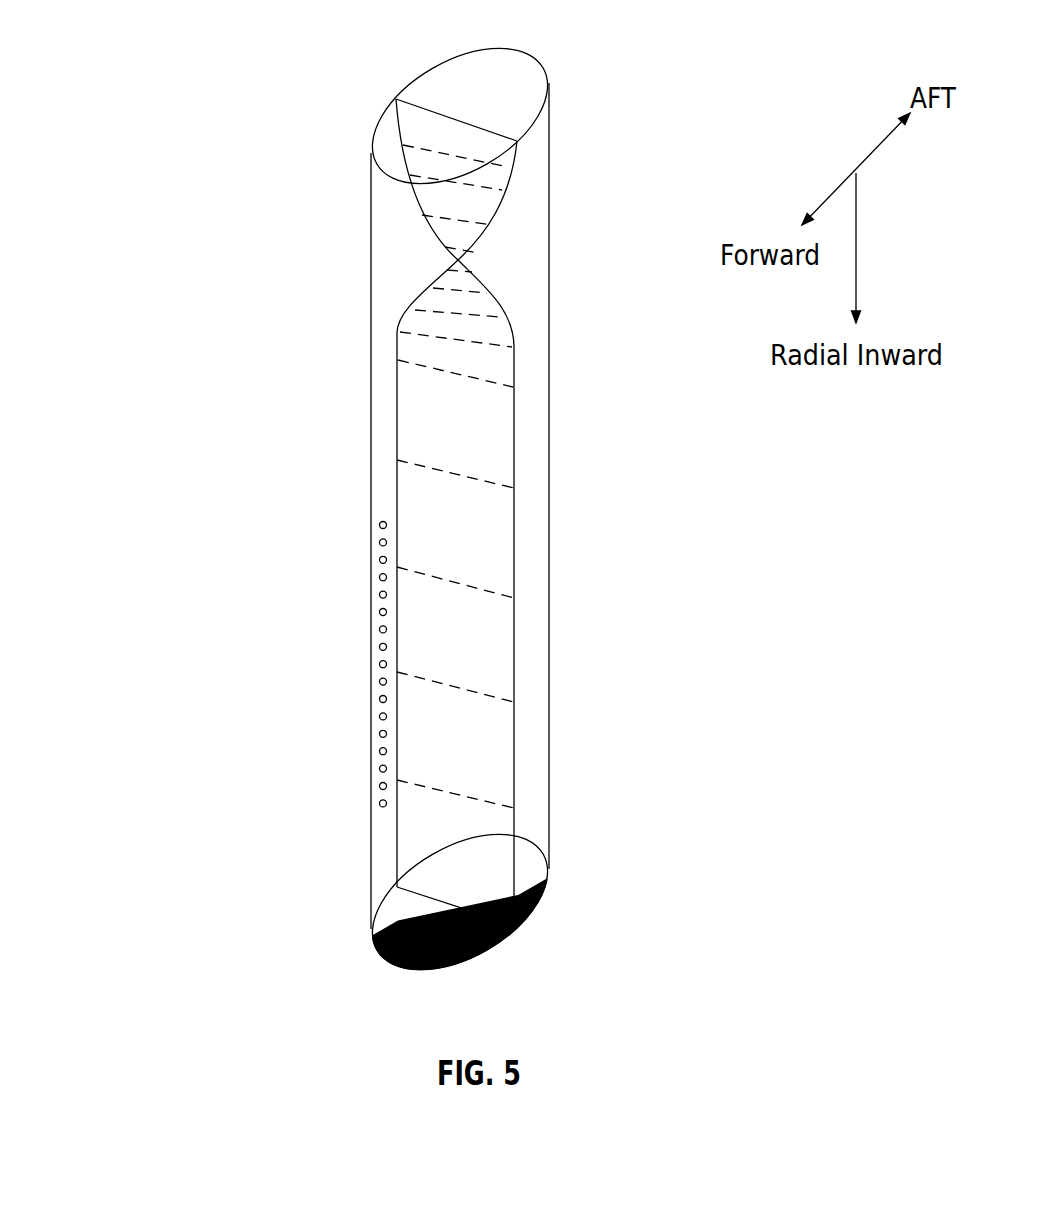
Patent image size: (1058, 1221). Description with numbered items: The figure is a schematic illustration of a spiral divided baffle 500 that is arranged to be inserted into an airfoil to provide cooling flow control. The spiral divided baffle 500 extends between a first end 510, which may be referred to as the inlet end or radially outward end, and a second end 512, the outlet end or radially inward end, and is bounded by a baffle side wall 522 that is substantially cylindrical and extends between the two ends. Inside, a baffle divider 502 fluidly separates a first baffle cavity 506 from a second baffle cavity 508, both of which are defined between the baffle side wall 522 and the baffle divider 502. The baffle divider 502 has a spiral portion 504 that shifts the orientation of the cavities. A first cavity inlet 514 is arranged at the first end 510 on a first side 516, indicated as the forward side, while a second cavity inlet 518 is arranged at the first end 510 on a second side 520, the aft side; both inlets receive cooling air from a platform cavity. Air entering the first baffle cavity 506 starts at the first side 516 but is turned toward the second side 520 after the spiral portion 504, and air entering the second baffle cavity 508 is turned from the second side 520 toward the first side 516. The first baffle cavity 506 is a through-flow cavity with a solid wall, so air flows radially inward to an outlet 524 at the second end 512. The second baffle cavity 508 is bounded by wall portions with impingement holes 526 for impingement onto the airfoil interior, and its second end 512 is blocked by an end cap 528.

The spiral divided baffle 500 is at (132, 92).
The baffle divider 502 is at (516, 615).
The spiral portion 504 is at (273, 137).
The first baffle cavity 506 is at (534, 662).
The second baffle cavity 508 is at (381, 492).
The first end 510 is at (566, 74).
The second end 512 is at (542, 935).
The first cavity inlet 514 is at (383, 139).
The first side 516 is at (392, 285).
The second cavity inlet 518 is at (449, 99).
The second side 520 is at (551, 188).
The baffle side wall 522 is at (551, 305).
The outlet 524 is at (536, 875).
The impingement holes 526 is at (379, 594).
The end cap 528 is at (403, 938).